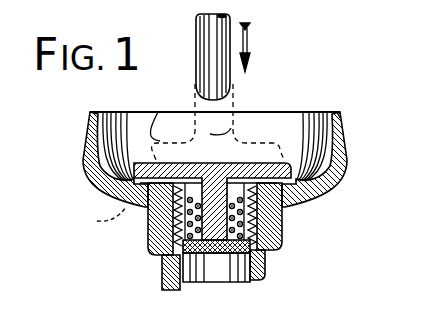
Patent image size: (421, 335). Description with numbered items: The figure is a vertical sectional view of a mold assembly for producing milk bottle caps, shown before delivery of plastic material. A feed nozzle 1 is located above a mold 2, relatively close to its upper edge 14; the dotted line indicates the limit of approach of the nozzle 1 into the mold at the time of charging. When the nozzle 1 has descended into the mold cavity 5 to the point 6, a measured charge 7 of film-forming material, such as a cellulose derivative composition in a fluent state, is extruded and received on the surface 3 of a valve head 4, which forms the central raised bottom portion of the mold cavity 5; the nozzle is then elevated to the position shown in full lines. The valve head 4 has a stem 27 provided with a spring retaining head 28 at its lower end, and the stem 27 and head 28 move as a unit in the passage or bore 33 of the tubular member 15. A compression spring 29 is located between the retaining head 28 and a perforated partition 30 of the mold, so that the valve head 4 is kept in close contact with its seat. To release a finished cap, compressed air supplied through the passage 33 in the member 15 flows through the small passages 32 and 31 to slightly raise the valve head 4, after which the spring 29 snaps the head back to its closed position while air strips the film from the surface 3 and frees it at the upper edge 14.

The feed nozzle 1 is at (232, 80).
The mold 2 is at (346, 150).
The surface of valve head 3 is at (299, 163).
The valve head 4 is at (285, 203).
The mold cavity 5 is at (148, 128).
The point of nozzle descent 6 is at (231, 128).
The measured charge 7 is at (102, 221).
The upper edge 14 is at (337, 112).
The tubular member 15 is at (266, 268).
The stem 27 is at (158, 253).
The spring retaining head 28 is at (192, 282).
The compression spring 29 is at (170, 260).
The perforated partition 30 is at (270, 220).
The small passage 31 is at (148, 236).
The small passage 32 is at (252, 279).
The passage or bore 33 is at (220, 284).